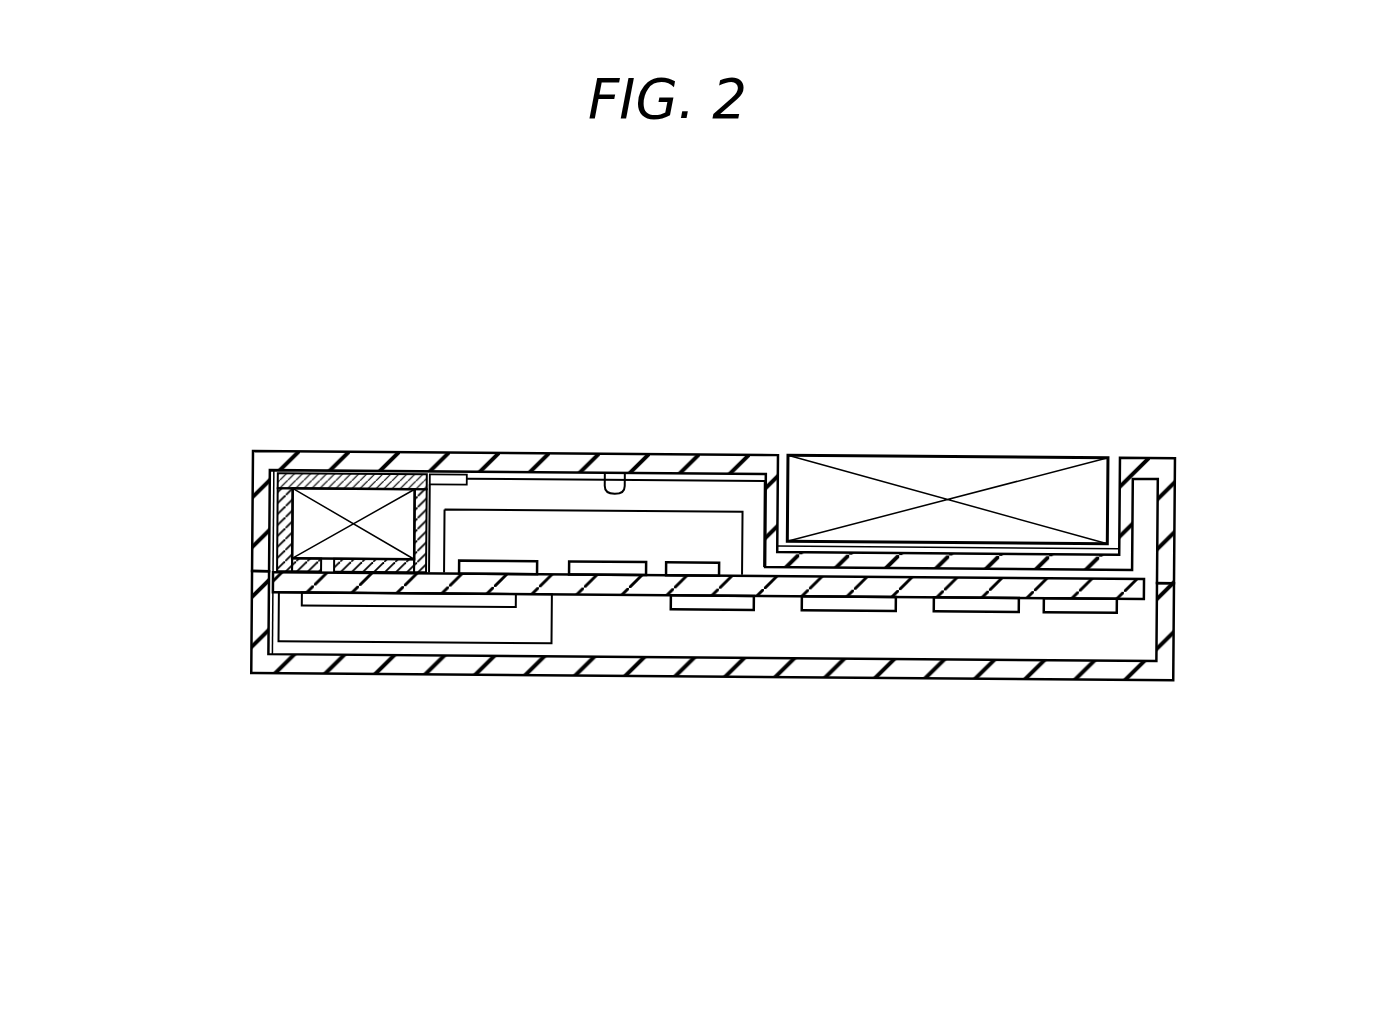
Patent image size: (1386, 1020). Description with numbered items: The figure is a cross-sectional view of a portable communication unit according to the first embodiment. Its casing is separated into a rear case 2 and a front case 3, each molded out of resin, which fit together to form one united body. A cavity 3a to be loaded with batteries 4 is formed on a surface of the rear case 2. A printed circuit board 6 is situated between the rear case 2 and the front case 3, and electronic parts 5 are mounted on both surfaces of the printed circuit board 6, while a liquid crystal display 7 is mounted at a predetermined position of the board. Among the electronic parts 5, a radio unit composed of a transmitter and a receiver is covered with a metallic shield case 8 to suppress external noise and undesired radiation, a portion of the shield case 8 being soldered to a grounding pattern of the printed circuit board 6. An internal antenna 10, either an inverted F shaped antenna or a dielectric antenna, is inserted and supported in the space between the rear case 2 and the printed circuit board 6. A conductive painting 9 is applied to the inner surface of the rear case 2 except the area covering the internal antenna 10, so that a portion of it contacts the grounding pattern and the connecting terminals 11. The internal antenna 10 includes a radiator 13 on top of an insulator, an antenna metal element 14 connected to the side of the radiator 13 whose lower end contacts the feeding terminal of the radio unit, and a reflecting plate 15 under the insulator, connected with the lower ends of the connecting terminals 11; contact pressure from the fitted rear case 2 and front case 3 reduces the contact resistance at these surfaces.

The rear case 2 is at (1173, 538).
The front case 3 is at (1172, 629).
The cavity 3a is at (1112, 477).
The batteries 4 is at (1012, 468).
The electronic parts 5 is at (692, 562).
The printed circuit board 6 is at (593, 588).
The liquid crystal display 7 is at (462, 633).
The shield case 8 is at (734, 477).
The conductive painting 9 is at (617, 562).
The internal antenna 10 is at (302, 512).
The connecting terminals 11 is at (448, 473).
The radiator 13 is at (381, 478).
The antenna metal element 14 is at (286, 543).
The reflecting plate 15 is at (358, 565).